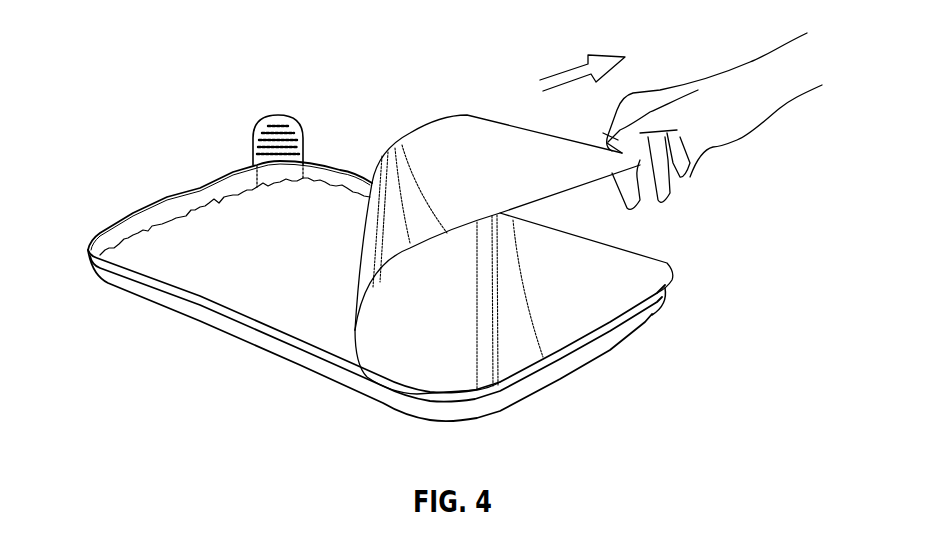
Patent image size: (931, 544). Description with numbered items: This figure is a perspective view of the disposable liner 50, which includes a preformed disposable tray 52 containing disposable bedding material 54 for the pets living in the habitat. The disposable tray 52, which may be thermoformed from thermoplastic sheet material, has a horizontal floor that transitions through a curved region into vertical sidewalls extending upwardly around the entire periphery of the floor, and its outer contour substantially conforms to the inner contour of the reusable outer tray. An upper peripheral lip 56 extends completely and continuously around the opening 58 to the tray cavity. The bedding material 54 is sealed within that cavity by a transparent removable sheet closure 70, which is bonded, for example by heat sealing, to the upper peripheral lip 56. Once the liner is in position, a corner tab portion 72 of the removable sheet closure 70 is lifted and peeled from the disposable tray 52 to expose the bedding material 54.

The disposable liner 50 is at (147, 94).
The disposable tray 52 is at (130, 223).
The disposable bedding material 54 is at (170, 263).
The upper peripheral lip 56 is at (240, 174).
The opening 58 is at (268, 302).
The removable sheet closure 70 is at (445, 146).
The corner tab portion 72 is at (630, 157).